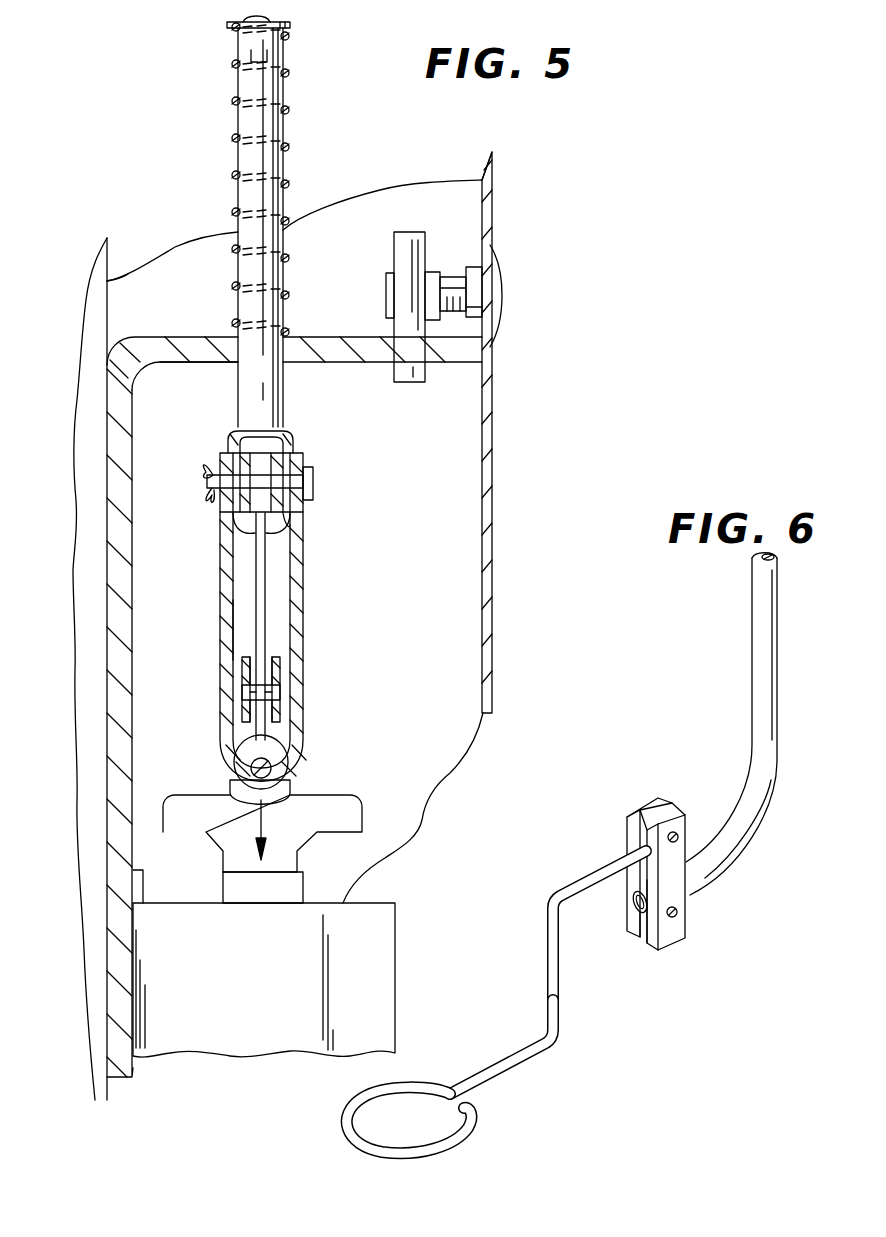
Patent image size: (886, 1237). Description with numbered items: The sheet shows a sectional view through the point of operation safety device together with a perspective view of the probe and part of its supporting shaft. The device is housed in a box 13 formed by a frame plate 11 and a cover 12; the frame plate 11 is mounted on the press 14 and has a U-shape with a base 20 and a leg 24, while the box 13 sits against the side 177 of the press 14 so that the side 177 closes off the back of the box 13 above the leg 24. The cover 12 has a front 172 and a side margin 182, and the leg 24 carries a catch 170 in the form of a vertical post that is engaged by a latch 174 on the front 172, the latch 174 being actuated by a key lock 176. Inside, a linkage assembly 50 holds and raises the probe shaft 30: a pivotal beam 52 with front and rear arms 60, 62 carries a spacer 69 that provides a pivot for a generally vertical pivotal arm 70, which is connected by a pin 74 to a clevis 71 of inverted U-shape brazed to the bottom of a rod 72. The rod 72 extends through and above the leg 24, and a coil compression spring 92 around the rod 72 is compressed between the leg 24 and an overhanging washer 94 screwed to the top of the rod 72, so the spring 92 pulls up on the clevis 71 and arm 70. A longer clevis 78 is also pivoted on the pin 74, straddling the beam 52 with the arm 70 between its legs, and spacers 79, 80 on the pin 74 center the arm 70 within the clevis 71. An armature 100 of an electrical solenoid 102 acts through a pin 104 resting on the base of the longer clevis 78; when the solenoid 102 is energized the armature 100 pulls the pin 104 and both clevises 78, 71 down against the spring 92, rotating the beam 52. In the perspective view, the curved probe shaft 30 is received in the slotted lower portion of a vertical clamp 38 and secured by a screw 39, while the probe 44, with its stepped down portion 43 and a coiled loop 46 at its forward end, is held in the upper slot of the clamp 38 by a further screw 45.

In FIG. 5, the frame plate 11 is at (158, 346).
In FIG. 5, the cover 12 is at (493, 505).
In FIG. 5, the box 13 is at (493, 455).
In FIG. 5, the press 14 is at (93, 292).
In FIG. 5, the base 20 is at (113, 430).
In FIG. 5, the leg 24 is at (462, 363).
In FIG. 6, the probe shaft 30 is at (752, 690).
In FIG. 6, the clamp 38 is at (686, 892).
In FIG. 6, the screw 39 is at (676, 916).
In FIG. 6, the stepped down portion 43 is at (560, 990).
In FIG. 6, the probe 44 is at (560, 1043).
In FIG. 6, the screw 45 is at (680, 830).
In FIG. 6, the coiled loop 46 is at (458, 1152).
In FIG. 5, the linkage assembly 50 is at (252, 603).
In FIG. 5, the pivotal beam 52 is at (283, 672).
In FIG. 5, the front arm 60 is at (282, 718).
In FIG. 5, the rear arm 62 is at (242, 710).
In FIG. 5, the spacer 69 is at (282, 691).
In FIG. 5, the pivotal arm 70 is at (268, 588).
In FIG. 5, the clevis 71 is at (230, 446).
In FIG. 5, the rod 72 is at (285, 385).
In FIG. 5, the pin 74 is at (313, 485).
In FIG. 5, the longer clevis 78 is at (301, 612).
In FIG. 5, the spacer 79 is at (236, 526).
In FIG. 5, the spacer 80 is at (290, 516).
In FIG. 5, the coil compression spring 92 is at (288, 112).
In FIG. 5, the overhanging washer 94 is at (288, 25).
In FIG. 5, the armature 100 is at (353, 798).
In FIG. 5, the electrical solenoid 102 is at (385, 903).
In FIG. 5, the pin 104 is at (270, 768).
In FIG. 5, the catch 170 is at (396, 250).
In FIG. 5, the front 172 is at (491, 196).
In FIG. 5, the latch 174 is at (387, 297).
In FIG. 5, the key lock 176 is at (499, 268).
In FIG. 5, the side 177 is at (108, 296).
In FIG. 5, the side margin 182 is at (437, 188).